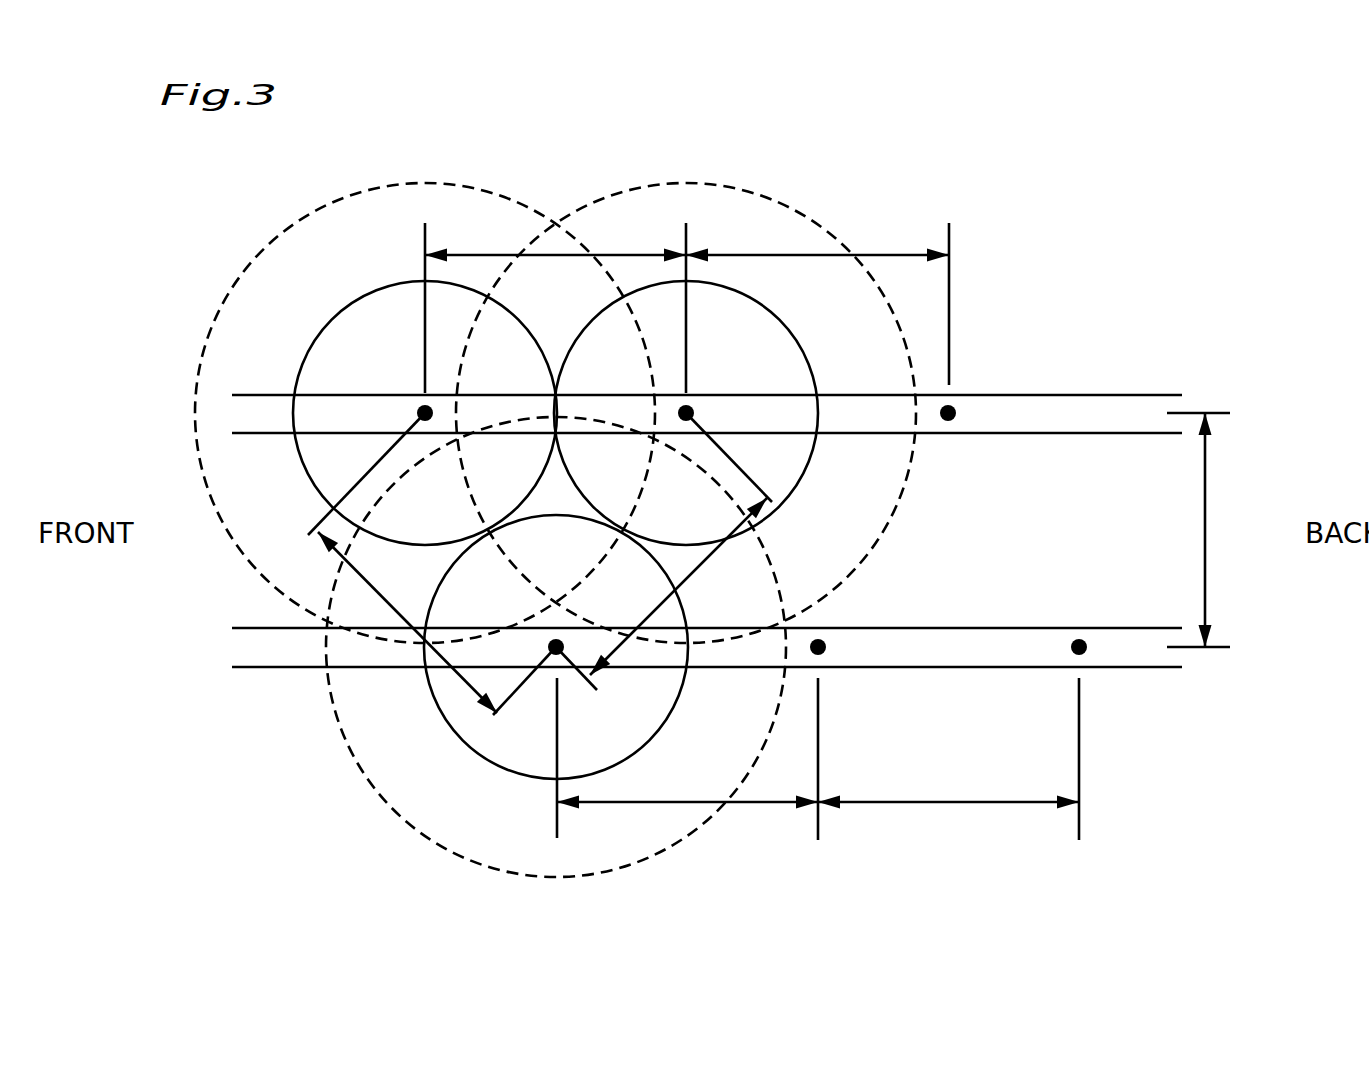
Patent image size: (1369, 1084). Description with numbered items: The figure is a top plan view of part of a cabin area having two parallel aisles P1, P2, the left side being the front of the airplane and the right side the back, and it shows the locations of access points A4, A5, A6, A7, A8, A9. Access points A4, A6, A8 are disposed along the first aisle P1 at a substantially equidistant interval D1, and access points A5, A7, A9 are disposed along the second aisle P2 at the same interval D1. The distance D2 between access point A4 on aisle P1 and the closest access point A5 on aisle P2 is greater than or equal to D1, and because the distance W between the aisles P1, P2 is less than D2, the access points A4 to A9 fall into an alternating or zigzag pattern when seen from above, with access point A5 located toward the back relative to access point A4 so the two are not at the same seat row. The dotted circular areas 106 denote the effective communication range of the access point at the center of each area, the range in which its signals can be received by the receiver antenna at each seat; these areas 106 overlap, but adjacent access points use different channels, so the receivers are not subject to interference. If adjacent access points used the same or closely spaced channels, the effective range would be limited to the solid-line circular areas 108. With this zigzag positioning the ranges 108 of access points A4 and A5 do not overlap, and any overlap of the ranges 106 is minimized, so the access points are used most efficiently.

The circular area 106 is at (427, 182).
The circular area 108 is at (332, 317).
The access point A4 is at (420, 408).
The access point A5 is at (562, 653).
The access point A6 is at (692, 408).
The access point A7 is at (820, 652).
The access point A8 is at (953, 408).
The access point A9 is at (1082, 652).
The aisle P1 is at (253, 433).
The aisle P2 is at (253, 667).
The interval D1 is at (752, 529).
The distance D2 is at (540, 564).
The distance W is at (1205, 530).